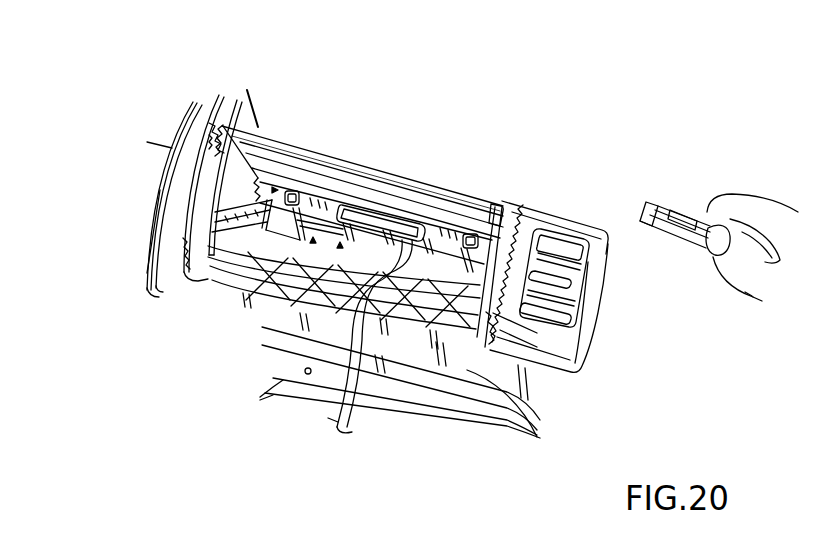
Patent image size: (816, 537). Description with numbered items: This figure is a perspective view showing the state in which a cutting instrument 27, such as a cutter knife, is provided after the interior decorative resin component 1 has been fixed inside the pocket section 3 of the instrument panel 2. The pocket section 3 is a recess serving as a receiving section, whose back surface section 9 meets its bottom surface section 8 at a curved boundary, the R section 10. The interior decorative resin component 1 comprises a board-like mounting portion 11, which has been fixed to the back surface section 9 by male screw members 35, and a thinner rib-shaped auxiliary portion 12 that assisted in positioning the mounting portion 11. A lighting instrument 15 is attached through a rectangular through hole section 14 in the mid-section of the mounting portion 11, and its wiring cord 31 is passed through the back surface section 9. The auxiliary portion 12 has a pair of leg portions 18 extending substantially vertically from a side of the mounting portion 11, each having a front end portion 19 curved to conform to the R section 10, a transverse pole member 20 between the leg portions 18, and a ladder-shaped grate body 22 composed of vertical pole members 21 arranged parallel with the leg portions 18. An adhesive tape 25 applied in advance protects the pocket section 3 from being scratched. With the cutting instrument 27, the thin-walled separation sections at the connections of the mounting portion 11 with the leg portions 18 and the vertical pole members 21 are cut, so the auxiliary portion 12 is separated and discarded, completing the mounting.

The interior decorative resin component 1 is at (240, 157).
The instrument panel 2 is at (423, 146).
The pocket section 3 is at (425, 184).
The bottom surface section 8 is at (248, 254).
The back surface section 9 is at (212, 233).
The R section 10 is at (426, 330).
The mounting portion 11 is at (402, 212).
The auxiliary portion 12 is at (275, 378).
The through hole section 14 is at (343, 205).
The lighting instrument 15 is at (377, 205).
The leg portions 18 is at (185, 275).
The front end portion 19 is at (294, 242).
The transverse pole member 20 is at (425, 285).
The vertical pole members 21 is at (356, 258).
The grate body 22 is at (308, 375).
The adhesive tape 25 is at (247, 130).
The cutting instrument 27 is at (656, 204).
The wiring cord 31 is at (352, 416).
The male screw members 35 is at (290, 190).